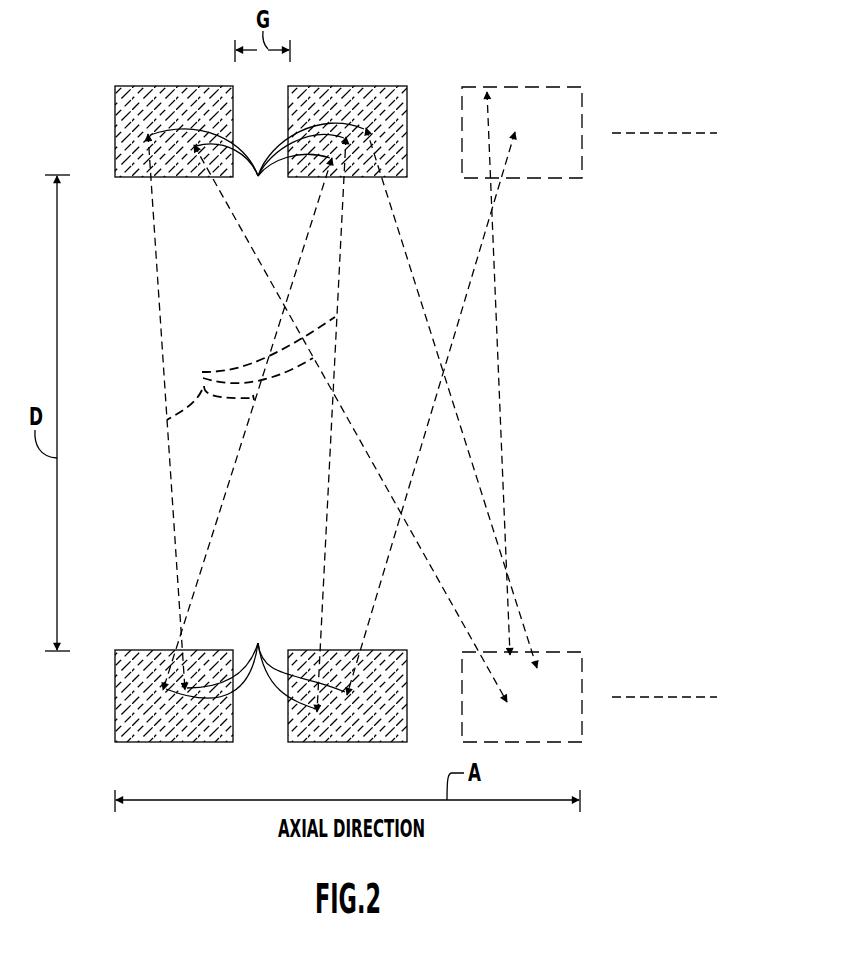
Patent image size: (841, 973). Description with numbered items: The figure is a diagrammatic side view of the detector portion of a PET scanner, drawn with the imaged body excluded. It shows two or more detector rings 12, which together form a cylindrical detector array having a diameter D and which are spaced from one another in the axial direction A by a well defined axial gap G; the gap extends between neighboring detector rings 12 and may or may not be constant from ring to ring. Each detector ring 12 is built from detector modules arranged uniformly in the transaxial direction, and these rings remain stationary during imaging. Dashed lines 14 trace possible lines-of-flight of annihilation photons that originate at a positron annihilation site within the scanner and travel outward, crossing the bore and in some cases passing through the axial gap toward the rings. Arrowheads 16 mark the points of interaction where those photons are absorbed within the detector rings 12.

The detector ring 12 is at (168, 86).
The dashed lines 14 is at (251, 368).
The arrowheads 16 is at (257, 416).